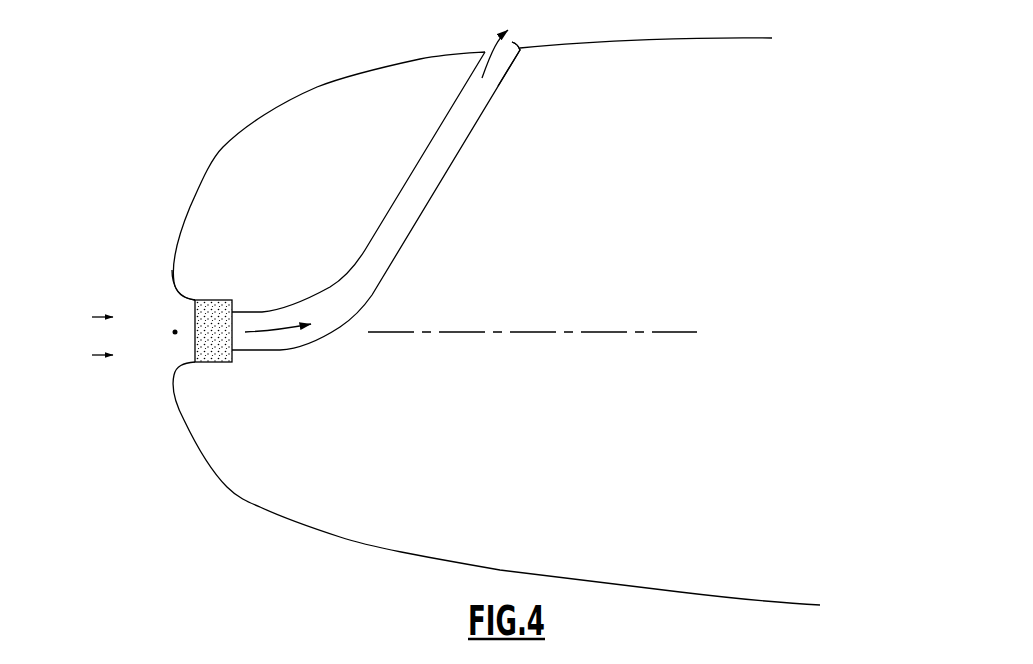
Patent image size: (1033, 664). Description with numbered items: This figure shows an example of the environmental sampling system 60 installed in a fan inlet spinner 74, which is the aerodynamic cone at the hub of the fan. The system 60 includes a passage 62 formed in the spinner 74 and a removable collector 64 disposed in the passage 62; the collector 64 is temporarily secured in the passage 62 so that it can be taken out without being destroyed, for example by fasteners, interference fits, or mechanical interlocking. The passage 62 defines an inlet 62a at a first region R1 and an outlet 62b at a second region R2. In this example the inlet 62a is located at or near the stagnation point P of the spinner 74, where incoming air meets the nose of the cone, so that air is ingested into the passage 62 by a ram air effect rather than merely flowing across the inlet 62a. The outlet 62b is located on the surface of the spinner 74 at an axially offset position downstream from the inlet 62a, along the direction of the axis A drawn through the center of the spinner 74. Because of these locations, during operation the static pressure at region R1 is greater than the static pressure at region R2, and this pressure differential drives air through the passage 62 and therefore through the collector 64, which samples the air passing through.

The environmental sampling system 60 is at (317, 262).
The passage 62 is at (248, 307).
The inlet 62a is at (188, 300).
The outlet 62b is at (513, 48).
The removable collector 64 is at (187, 352).
The fan inlet spinner 74 is at (258, 512).
The stagnation point P is at (175, 332).
The first region R1 is at (168, 351).
The second region R2 is at (502, 36).
The axis A is at (614, 332).